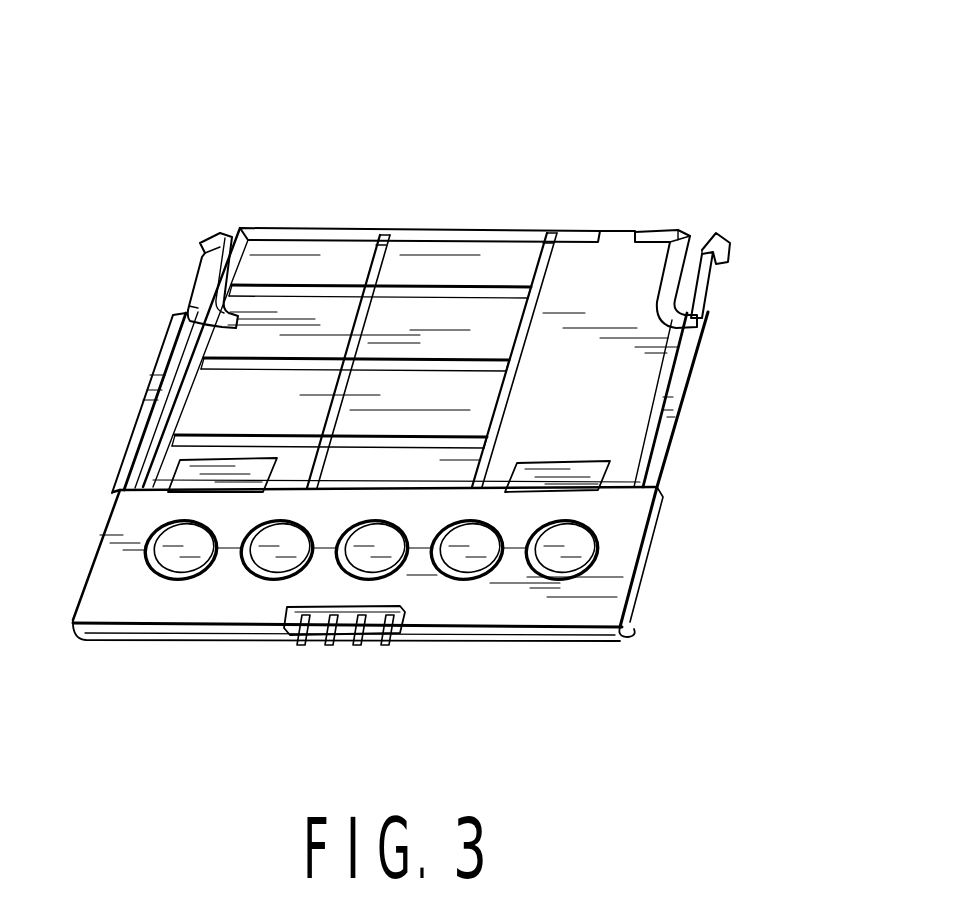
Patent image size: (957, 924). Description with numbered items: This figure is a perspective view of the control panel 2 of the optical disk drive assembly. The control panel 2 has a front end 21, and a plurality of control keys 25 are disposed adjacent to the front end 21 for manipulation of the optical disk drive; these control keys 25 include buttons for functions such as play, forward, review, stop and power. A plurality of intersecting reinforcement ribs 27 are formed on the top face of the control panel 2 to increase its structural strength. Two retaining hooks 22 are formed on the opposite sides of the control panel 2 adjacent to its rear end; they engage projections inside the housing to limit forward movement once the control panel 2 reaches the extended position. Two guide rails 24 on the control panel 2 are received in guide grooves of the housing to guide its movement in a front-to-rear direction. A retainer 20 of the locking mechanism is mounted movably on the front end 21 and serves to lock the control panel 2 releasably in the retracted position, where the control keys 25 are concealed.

The control panel 2 is at (552, 186).
The retainer 20 is at (367, 643).
The front end 21 is at (573, 640).
The retaining hooks 22 is at (202, 280).
The guide rails 24 is at (143, 413).
The control keys 25 is at (255, 555).
The intersecting reinforcement ribs 27 is at (436, 288).